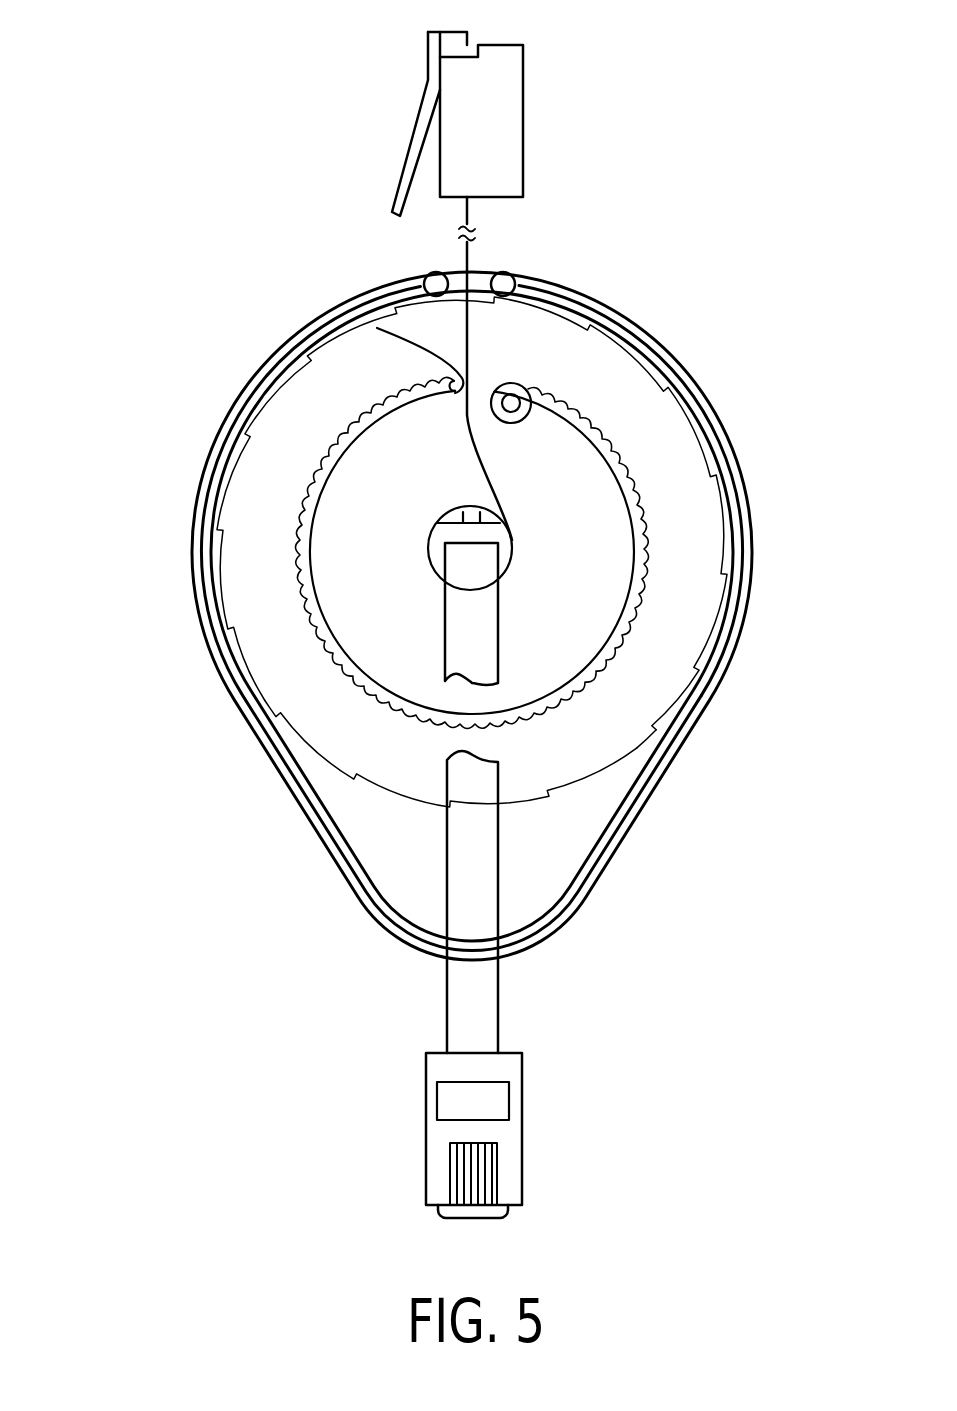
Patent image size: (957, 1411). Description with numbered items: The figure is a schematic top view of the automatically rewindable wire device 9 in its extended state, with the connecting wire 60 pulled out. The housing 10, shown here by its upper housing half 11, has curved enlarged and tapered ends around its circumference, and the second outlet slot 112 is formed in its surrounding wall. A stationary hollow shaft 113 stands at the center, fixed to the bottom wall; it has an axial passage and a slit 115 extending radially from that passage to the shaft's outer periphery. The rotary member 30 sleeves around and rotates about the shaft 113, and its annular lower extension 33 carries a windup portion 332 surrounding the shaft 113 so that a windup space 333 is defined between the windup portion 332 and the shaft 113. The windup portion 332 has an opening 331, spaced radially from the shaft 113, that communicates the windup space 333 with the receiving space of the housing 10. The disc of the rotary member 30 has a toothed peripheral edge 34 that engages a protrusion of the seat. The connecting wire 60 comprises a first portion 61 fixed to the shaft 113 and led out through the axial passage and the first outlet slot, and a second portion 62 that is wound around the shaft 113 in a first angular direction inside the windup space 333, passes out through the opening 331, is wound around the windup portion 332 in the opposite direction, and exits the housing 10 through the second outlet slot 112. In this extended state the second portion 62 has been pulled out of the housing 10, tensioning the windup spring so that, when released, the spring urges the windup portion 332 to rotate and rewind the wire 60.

The automatically rewindable wire device 9 is at (712, 172).
The housing 10 is at (733, 662).
The upper housing half 11 is at (665, 355).
The second outlet slot 112 is at (480, 280).
The stationary hollow shaft 113 is at (458, 532).
The slit 115 is at (512, 550).
The rotary member 30 is at (667, 440).
The annular lower extension 33 is at (633, 495).
The opening 331 is at (377, 328).
The windup portion 332 is at (313, 487).
The windup space 333 is at (360, 470).
The toothed peripheral edge 34 is at (652, 727).
The connecting wire 60 is at (503, 865).
The first portion of the wire 61 is at (522, 1117).
The second portion of the wire 62 is at (523, 160).